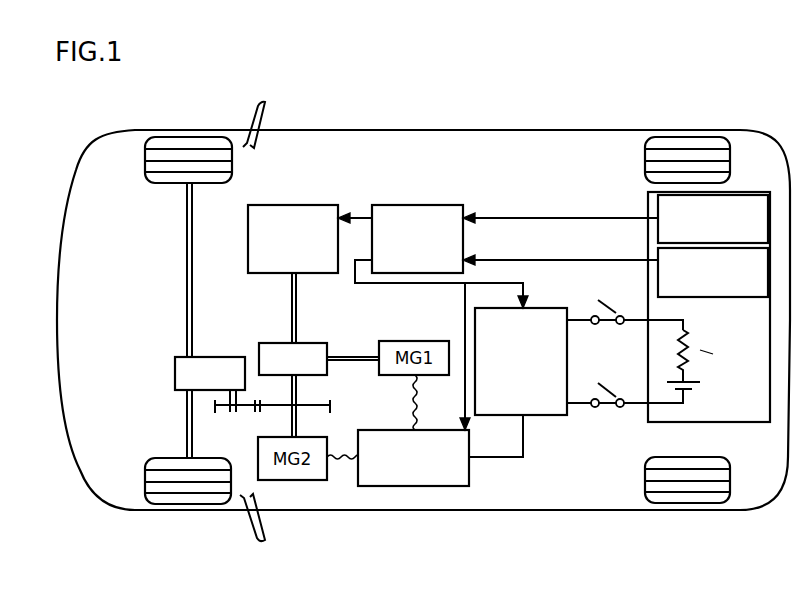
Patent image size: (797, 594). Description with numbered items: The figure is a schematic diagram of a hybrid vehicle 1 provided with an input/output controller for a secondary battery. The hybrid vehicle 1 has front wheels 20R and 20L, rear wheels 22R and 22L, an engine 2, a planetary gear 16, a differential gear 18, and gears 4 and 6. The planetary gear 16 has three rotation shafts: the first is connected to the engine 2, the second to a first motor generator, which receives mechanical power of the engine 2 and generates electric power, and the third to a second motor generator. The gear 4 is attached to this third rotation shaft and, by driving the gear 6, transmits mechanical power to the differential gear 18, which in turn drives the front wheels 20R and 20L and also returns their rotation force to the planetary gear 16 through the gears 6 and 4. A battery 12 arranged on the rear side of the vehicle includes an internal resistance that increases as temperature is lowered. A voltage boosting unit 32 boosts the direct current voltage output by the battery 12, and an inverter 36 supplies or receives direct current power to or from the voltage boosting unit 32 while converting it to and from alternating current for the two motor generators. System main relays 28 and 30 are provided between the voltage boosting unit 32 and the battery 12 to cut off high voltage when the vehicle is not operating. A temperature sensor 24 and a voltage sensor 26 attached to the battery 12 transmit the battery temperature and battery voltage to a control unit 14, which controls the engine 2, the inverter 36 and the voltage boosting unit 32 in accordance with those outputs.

The hybrid vehicle 1 is at (594, 130).
The engine 2 is at (315, 205).
The gear 4 is at (331, 413).
The gear 6 is at (220, 410).
The battery 12 is at (748, 192).
The control unit 14 is at (424, 205).
The planetary gear 16 is at (272, 343).
The differential gear 18 is at (175, 373).
The front wheel 20R is at (174, 137).
The front wheel 20L is at (172, 504).
The rear wheel 22R is at (673, 137).
The rear wheel 22L is at (672, 504).
The temperature sensor 24 is at (658, 210).
The voltage sensor 26 is at (658, 265).
The system main relay 28 is at (595, 325).
The system main relay 30 is at (598, 408).
The voltage boosting unit 32 is at (550, 417).
The inverter 36 is at (425, 486).